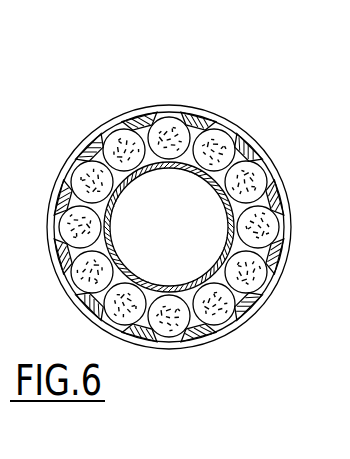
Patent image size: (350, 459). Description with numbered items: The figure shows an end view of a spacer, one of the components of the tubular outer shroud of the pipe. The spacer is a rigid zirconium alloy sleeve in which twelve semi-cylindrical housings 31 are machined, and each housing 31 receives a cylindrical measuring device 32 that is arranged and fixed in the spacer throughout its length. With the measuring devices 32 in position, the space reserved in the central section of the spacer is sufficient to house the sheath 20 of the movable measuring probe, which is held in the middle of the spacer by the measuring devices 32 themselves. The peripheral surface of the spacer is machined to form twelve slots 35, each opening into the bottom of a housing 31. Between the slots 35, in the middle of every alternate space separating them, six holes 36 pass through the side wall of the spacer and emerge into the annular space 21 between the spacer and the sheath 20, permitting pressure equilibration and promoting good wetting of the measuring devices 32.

The sheath 20 is at (210, 178).
The annular space 21 is at (156, 133).
The semi-cylindrical housing 31 is at (219, 130).
The measuring device 32 is at (250, 170).
The slot 35 is at (293, 227).
The hole 36 is at (290, 262).